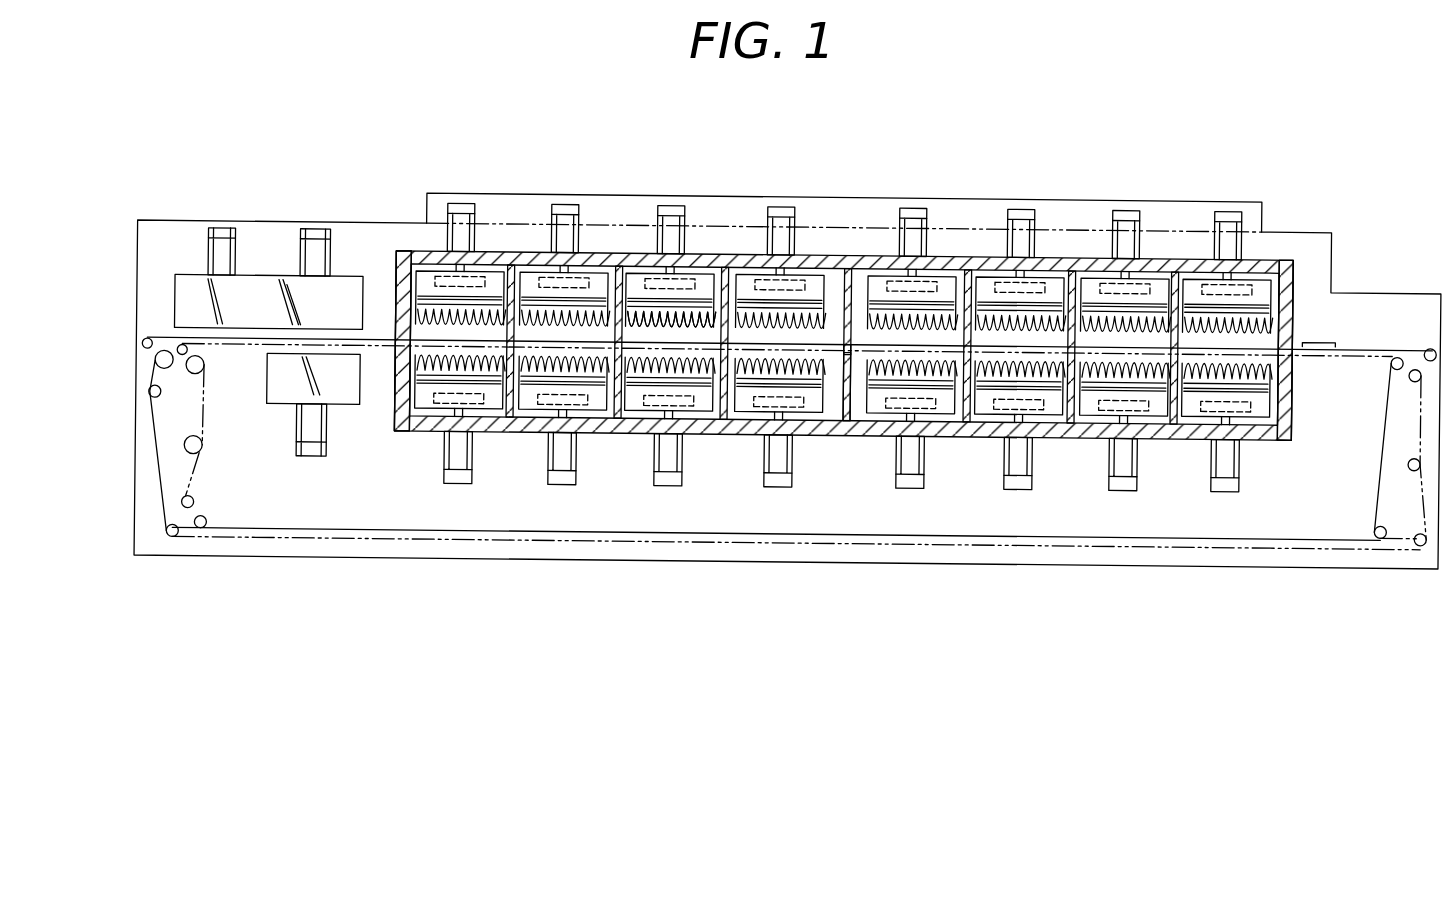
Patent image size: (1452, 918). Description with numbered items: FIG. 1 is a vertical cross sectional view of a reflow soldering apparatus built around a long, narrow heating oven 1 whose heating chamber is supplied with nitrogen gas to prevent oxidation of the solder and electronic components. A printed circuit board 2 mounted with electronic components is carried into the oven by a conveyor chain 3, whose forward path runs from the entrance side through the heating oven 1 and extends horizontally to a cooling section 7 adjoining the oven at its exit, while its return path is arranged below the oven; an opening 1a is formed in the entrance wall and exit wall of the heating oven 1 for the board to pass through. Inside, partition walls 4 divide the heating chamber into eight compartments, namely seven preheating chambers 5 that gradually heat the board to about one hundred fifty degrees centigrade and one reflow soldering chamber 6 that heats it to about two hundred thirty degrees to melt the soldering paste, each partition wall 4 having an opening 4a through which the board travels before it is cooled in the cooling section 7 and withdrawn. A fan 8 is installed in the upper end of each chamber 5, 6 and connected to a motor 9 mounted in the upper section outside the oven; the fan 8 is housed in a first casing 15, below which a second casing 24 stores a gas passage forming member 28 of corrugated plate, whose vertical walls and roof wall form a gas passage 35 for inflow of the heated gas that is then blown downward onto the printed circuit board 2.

The heating oven 1 is at (620, 248).
The opening 1a is at (393, 353).
The printed circuit board 2 is at (1313, 337).
The conveyor chain 3 is at (1385, 345).
The partition wall 4 is at (837, 392).
The opening 4a is at (857, 353).
The preheating chamber 5 is at (1263, 276).
The reflow soldering chamber 6 is at (412, 262).
The cooling section 7 is at (264, 290).
The fan 8 is at (1143, 275).
The motor 9 is at (1122, 218).
The first casing 15 is at (990, 275).
The second casing 24 is at (860, 320).
The gas passage forming member 28 is at (633, 322).
The gas passage 35 is at (690, 325).